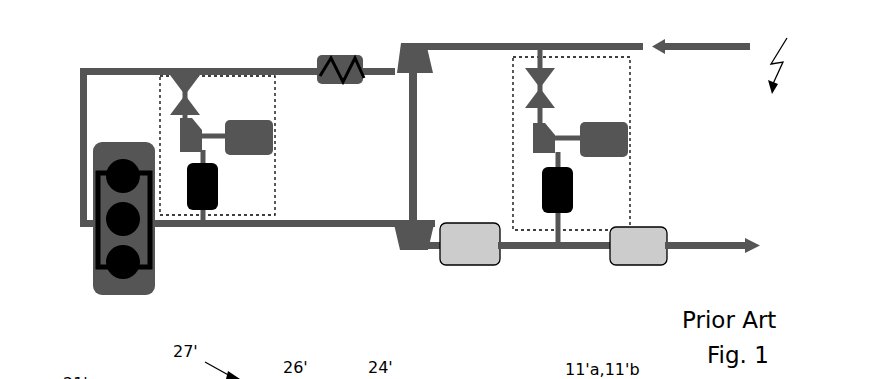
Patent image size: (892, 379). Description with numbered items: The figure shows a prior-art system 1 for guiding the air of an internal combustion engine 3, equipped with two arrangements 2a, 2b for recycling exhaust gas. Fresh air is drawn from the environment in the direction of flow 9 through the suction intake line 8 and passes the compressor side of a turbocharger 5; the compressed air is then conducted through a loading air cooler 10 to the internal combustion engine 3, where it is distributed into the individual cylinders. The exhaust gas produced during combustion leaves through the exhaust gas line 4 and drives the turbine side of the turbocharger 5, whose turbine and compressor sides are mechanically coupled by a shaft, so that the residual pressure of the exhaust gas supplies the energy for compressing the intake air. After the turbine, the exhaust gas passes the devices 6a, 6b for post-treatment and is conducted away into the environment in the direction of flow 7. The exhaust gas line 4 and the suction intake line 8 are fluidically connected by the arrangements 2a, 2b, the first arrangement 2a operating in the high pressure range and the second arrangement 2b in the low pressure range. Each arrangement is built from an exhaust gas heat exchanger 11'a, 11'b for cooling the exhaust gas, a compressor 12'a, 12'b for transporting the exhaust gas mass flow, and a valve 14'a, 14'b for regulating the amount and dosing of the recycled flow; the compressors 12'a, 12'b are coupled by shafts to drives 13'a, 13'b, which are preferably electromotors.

The system for guiding air 1 is at (781, 56).
The first arrangement for recycling exhaust gas 2a is at (282, 192).
The second arrangement for recycling exhaust gas 2b is at (640, 193).
The internal combustion engine 3 is at (98, 282).
The exhaust gas line 4 is at (330, 228).
The turbocharger 5 is at (408, 143).
The device for post-treatment of exhaust gas 6a is at (470, 244).
The device for post-treatment of exhaust gas 6b is at (638, 246).
The direction of flow of exhaust gas 7 is at (728, 238).
The suction intake line 8 is at (142, 68).
The direction of flow 9 is at (685, 52).
The loading air cooler 10 is at (318, 62).
The exhaust gas heat exchanger 11'a is at (224, 186).
The exhaust gas heat exchanger 11'b is at (578, 199).
The compressor 12'a is at (214, 124).
The compressor 12'b is at (572, 126).
The drive 13'a is at (273, 127).
The drive 13'b is at (626, 128).
The valve 14'a is at (199, 72).
The valve 14'b is at (556, 72).